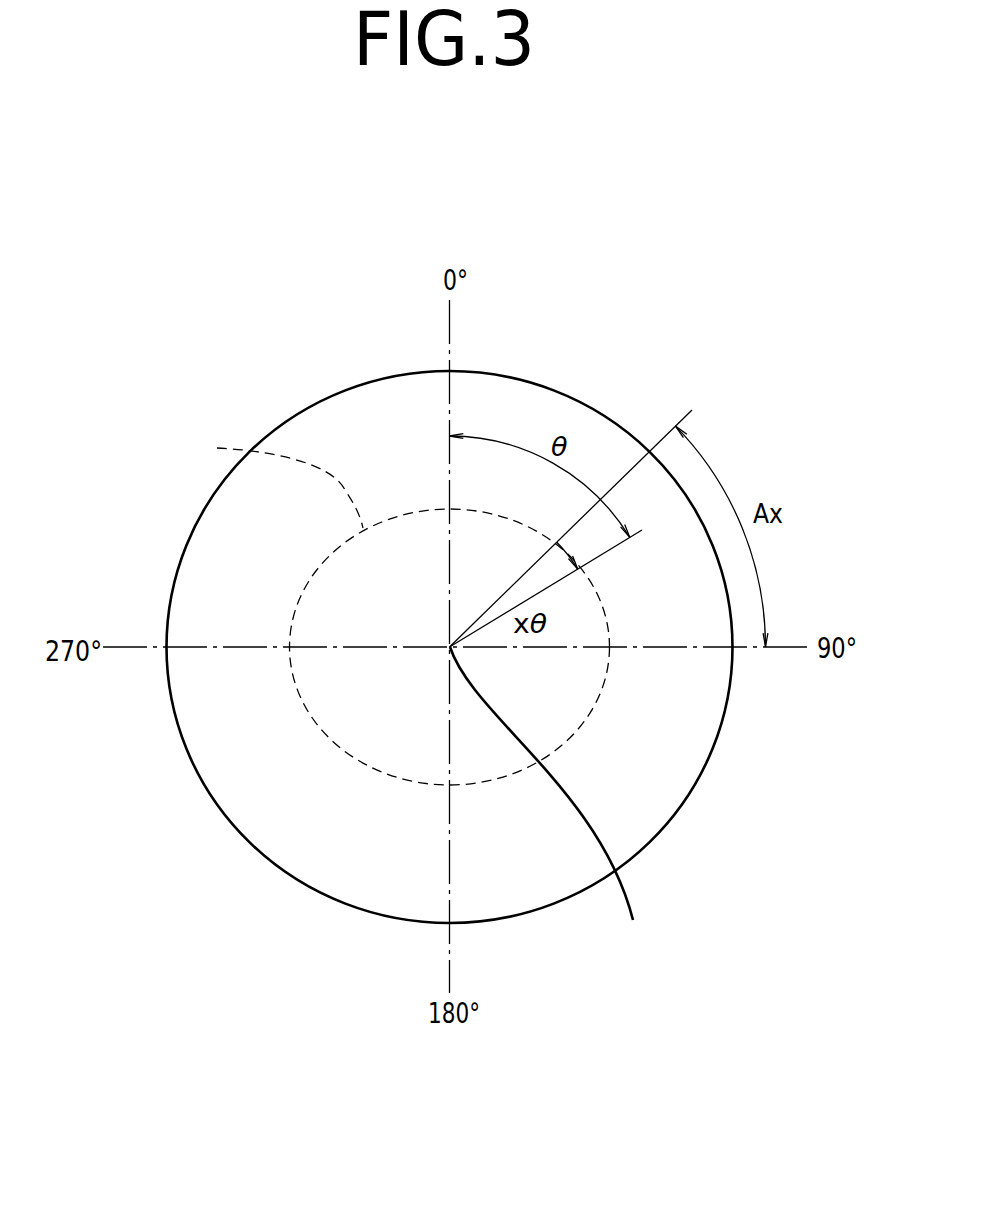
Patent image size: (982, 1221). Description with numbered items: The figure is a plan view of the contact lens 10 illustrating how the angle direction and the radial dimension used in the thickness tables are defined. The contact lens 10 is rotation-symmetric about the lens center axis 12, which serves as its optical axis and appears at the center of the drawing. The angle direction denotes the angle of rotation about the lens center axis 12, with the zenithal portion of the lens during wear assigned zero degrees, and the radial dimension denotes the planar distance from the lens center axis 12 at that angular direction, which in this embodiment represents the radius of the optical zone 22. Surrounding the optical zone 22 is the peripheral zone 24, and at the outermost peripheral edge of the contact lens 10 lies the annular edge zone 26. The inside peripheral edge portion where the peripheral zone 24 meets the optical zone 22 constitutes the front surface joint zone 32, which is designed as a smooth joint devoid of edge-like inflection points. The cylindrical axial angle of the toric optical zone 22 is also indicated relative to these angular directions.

The contact lens 10 is at (495, 619).
The lens center axis 12 is at (549, 803).
The optical zone 22 is at (573, 693).
The peripheral zone 24 is at (332, 420).
The edge zone 26 is at (525, 380).
The front surface joint zone 32 is at (273, 481).